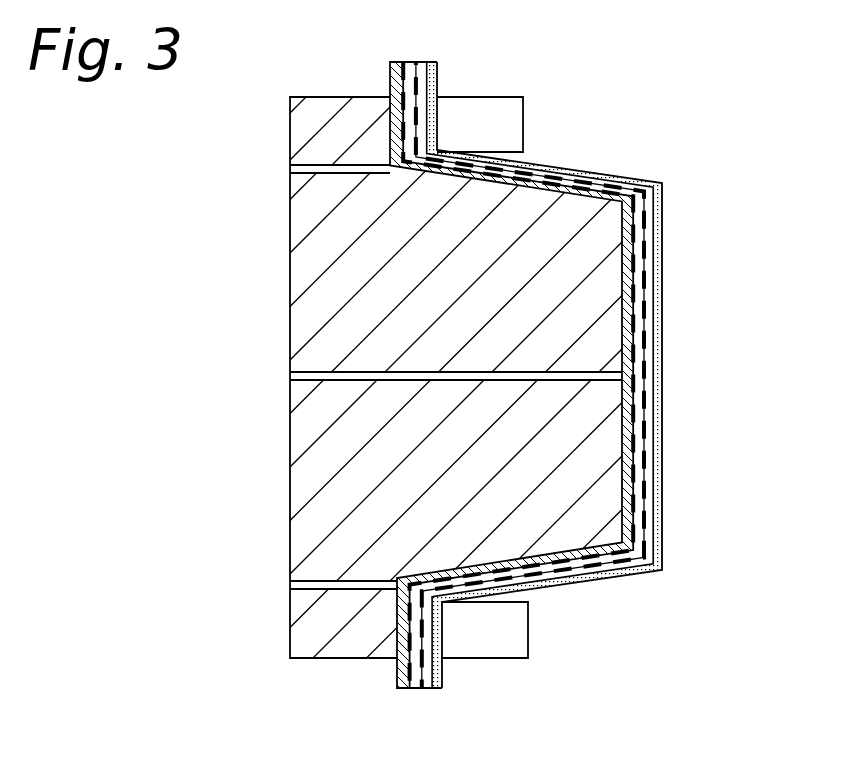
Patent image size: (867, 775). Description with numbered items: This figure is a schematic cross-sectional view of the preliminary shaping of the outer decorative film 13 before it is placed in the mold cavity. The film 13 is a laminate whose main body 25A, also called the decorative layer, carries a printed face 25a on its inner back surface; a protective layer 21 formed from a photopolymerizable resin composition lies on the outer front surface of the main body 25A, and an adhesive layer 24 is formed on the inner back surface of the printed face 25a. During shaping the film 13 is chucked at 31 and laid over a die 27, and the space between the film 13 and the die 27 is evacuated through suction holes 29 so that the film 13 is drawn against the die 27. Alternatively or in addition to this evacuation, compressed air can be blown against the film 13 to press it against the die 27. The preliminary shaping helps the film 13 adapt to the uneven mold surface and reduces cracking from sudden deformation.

The outer decorative film 13 is at (608, 375).
The protective layer 21 is at (767, 250).
The adhesive layer 24 is at (625, 260).
The printed face 25a is at (639, 284).
The main body 25A is at (647, 320).
The die 27 is at (333, 453).
The suction holes 29 is at (350, 168).
The chucking location 31 is at (477, 112).